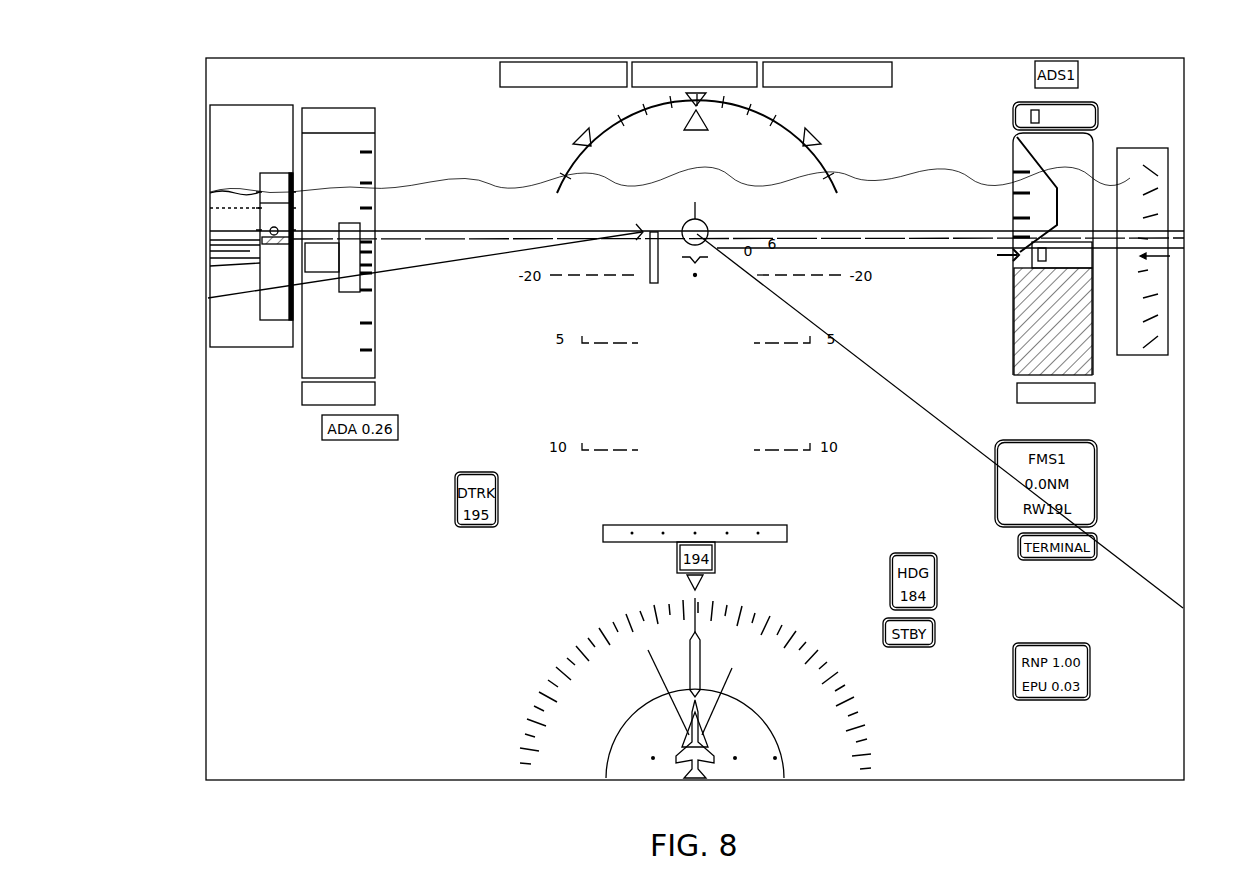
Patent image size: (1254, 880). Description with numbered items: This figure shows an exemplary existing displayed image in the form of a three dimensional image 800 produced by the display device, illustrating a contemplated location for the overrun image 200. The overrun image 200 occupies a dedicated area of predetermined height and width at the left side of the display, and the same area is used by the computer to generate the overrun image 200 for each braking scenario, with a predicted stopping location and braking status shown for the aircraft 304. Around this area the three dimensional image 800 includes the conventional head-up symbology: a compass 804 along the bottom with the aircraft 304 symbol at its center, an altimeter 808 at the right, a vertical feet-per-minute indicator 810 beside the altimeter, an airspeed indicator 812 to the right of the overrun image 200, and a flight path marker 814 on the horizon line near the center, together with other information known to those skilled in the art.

The overrun image 200 is at (207, 200).
The aircraft 304 is at (694, 781).
The three dimensional image 800 is at (1184, 75).
The compass 804 is at (857, 782).
The altimeter 808 is at (1096, 143).
The vertical feet-per-minute indicator 810 is at (1170, 264).
The airspeed indicator 812 is at (346, 108).
The flight path marker 814 is at (706, 220).